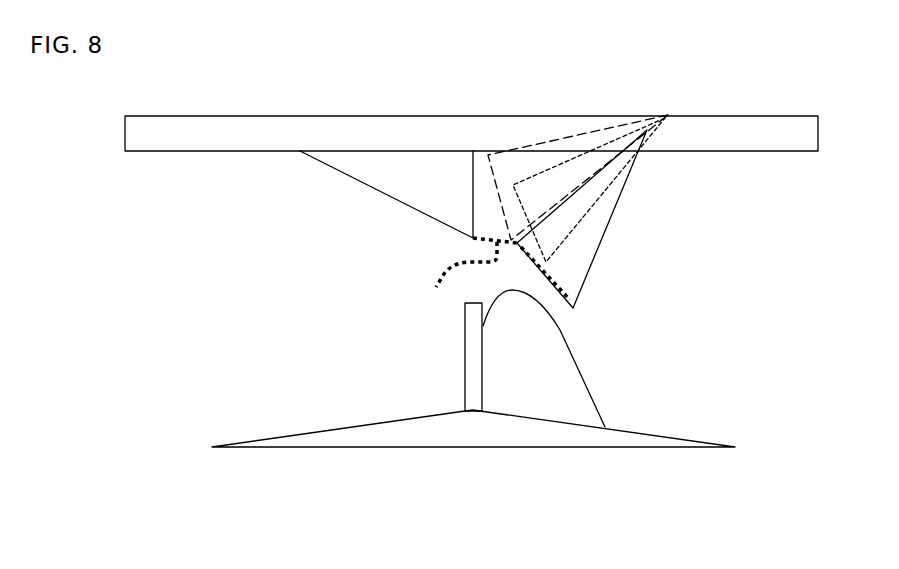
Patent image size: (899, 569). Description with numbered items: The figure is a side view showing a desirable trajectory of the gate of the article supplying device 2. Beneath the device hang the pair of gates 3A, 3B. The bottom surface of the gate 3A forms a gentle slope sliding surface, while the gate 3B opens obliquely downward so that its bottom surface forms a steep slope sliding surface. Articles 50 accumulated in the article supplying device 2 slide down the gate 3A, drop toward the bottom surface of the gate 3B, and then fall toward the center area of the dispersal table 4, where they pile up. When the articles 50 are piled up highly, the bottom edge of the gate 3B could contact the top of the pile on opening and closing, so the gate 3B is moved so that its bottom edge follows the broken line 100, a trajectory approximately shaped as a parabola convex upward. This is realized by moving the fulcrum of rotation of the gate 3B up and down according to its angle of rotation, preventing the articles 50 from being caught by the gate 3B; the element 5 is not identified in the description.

The article supplying device 2 is at (777, 135).
The gate 3A is at (393, 178).
The gate 3B is at (595, 232).
The broken line 100 is at (491, 273).
The partition wall 5 is at (467, 350).
The articles 50 is at (552, 382).
The dispersal table 4 is at (490, 435).